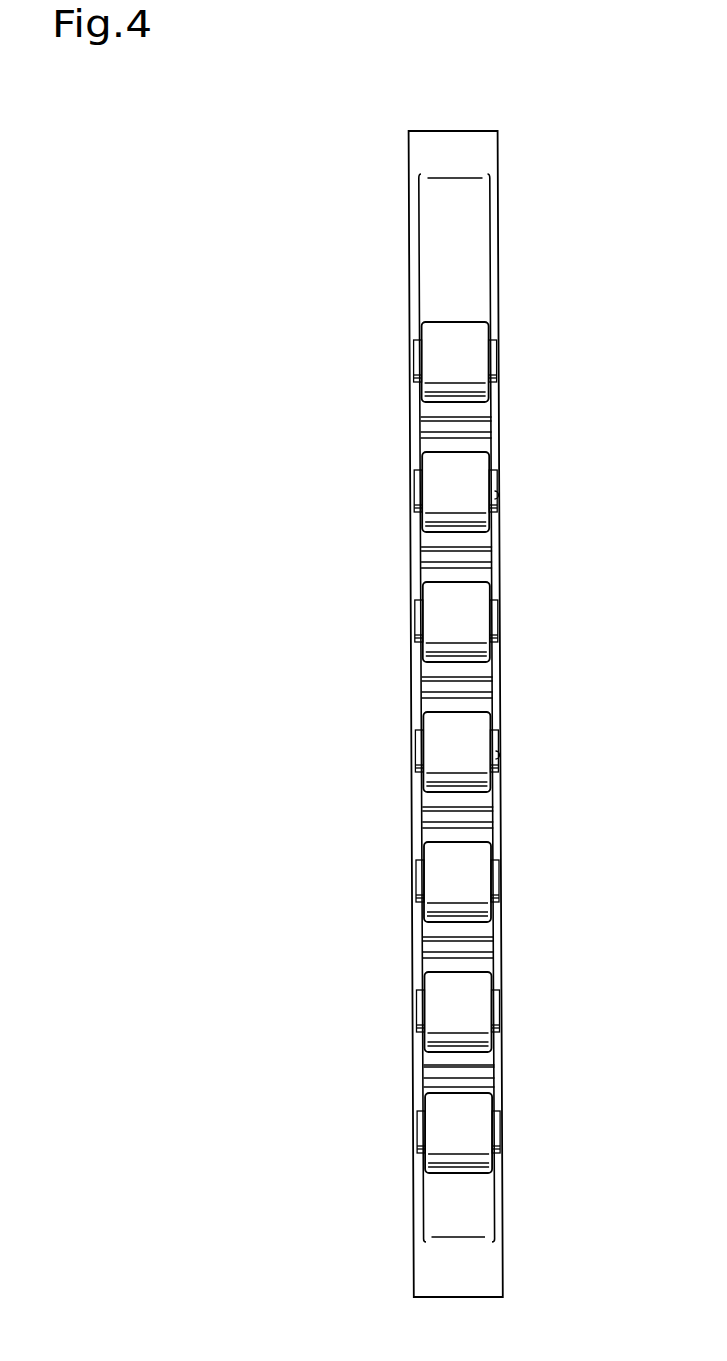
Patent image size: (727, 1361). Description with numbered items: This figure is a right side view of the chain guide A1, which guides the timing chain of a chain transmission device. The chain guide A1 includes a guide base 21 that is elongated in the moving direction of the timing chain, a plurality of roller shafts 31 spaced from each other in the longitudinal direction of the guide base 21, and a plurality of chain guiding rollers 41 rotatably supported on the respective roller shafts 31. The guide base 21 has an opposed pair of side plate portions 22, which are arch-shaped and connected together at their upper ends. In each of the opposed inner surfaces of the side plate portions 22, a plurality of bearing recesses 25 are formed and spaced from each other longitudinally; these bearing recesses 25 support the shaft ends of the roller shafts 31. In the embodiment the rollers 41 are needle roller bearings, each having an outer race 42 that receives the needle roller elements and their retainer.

The chain guide A1 is at (408, 250).
The guide base 21 is at (413, 427).
The side plate portions 22 is at (498, 816).
The bearing recesses 25 is at (498, 498).
The roller shafts 31 is at (415, 490).
The chain guiding rollers 41 is at (457, 448).
The outer race 42 is at (441, 505).